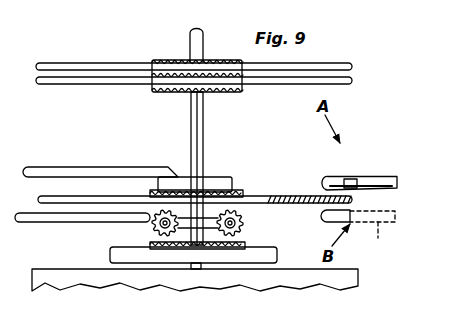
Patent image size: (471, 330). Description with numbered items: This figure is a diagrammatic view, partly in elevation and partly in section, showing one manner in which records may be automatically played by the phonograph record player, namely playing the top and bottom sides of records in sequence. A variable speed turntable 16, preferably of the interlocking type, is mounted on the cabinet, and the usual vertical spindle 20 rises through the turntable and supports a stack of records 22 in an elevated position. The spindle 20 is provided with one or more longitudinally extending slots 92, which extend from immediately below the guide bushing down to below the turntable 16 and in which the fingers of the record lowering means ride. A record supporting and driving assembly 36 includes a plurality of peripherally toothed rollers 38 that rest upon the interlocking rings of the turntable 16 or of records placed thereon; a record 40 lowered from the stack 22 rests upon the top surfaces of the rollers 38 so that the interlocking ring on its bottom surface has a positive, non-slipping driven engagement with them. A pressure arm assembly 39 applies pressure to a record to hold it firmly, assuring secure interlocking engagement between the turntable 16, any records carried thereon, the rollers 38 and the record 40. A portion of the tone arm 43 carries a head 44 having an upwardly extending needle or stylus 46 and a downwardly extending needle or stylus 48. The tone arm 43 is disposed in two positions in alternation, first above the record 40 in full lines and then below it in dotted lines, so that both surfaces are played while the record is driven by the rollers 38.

The variable speed turntable 16 is at (255, 257).
The vertical spindle 20 is at (200, 42).
The stack of records 22 is at (125, 62).
The record supporting and driving assembly 36 is at (57, 220).
The peripherally toothed rollers 38 is at (237, 233).
The pressure arm assembly 39 is at (60, 164).
The record 40 is at (260, 196).
The tone arm 43 is at (377, 176).
The head 44 is at (352, 178).
The upwardly extending needle or stylus 46 is at (341, 178).
The downwardly extending needle or stylus 48 is at (340, 194).
The longitudinally extending slots 92 is at (200, 126).